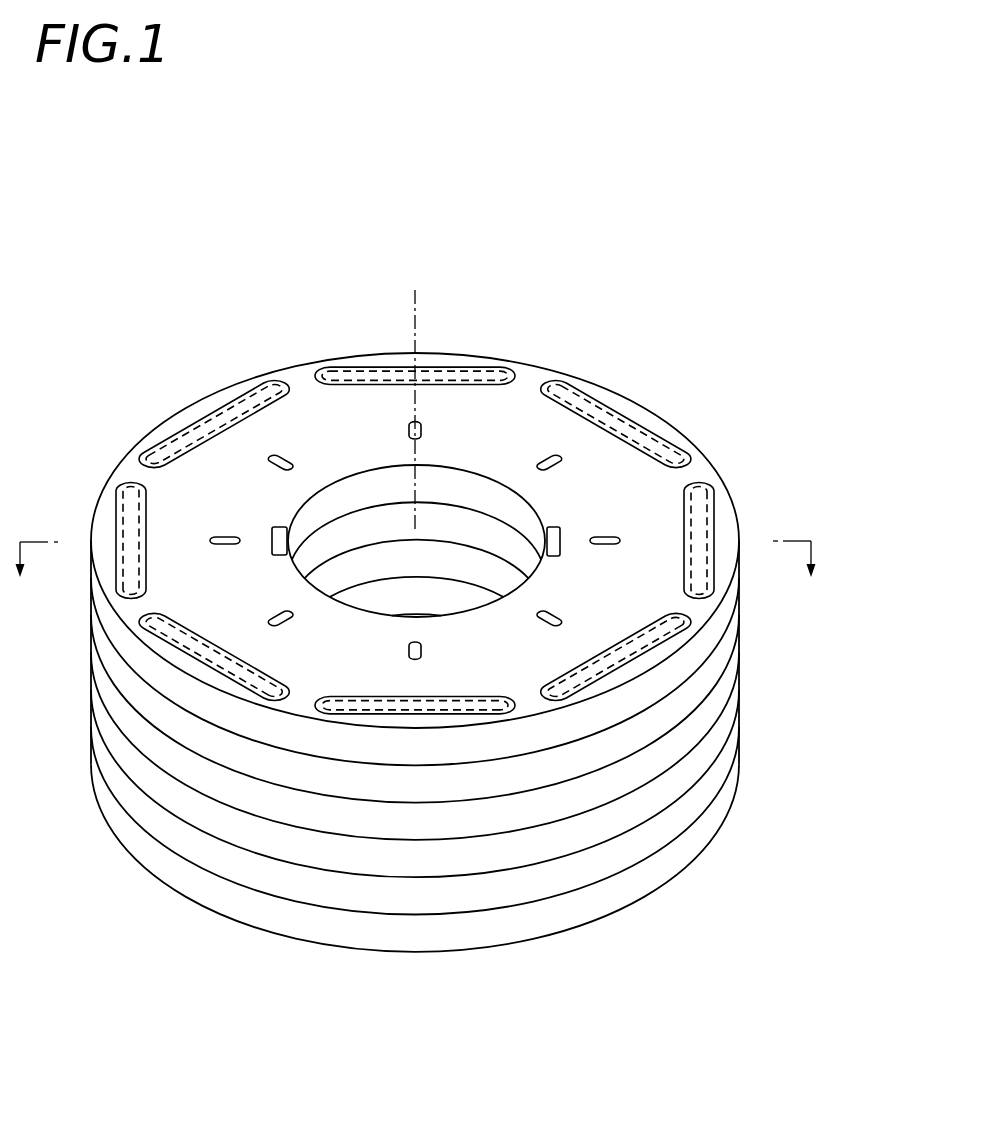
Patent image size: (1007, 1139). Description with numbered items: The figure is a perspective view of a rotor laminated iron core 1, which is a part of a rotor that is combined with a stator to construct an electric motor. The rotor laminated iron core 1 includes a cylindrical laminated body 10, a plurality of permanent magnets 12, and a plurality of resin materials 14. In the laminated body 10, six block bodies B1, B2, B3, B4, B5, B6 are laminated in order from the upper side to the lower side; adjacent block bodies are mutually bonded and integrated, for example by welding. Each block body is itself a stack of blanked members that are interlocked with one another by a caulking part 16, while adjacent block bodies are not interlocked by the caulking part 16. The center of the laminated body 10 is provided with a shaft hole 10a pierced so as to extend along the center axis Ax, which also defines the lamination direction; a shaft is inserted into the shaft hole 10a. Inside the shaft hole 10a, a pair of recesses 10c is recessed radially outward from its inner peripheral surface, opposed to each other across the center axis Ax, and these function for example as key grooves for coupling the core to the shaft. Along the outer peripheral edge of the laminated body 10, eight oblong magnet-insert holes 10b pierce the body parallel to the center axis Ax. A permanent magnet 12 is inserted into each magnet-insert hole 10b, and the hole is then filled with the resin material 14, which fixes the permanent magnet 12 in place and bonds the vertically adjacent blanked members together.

The rotor laminated iron core 1 is at (681, 201).
The laminated body 10 is at (74, 825).
The shaft hole 10a is at (479, 488).
The magnet-insert hole 10b is at (313, 370).
The recess 10c is at (271, 461).
The permanent magnet 12 is at (131, 487).
The resin material 14 is at (690, 452).
The caulking part 16 is at (271, 533).
The center axis Ax is at (421, 297).
The block body B1 is at (697, 655).
The block body B2 is at (697, 692).
The block body B3 is at (697, 728).
The block body B4 is at (697, 765).
The block body B5 is at (697, 802).
The block body B6 is at (697, 838).